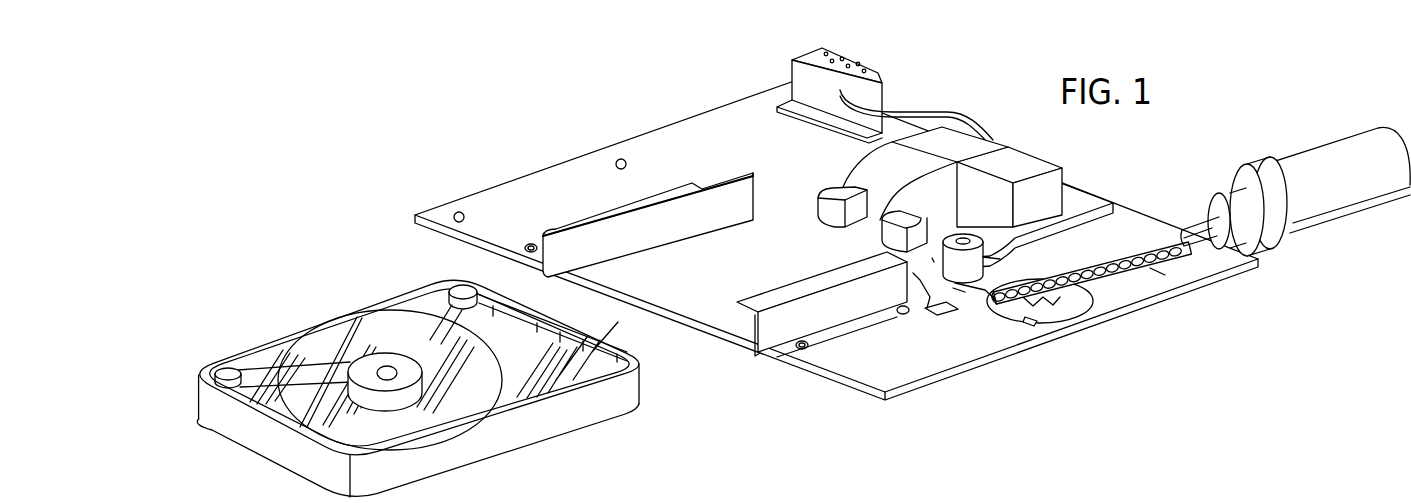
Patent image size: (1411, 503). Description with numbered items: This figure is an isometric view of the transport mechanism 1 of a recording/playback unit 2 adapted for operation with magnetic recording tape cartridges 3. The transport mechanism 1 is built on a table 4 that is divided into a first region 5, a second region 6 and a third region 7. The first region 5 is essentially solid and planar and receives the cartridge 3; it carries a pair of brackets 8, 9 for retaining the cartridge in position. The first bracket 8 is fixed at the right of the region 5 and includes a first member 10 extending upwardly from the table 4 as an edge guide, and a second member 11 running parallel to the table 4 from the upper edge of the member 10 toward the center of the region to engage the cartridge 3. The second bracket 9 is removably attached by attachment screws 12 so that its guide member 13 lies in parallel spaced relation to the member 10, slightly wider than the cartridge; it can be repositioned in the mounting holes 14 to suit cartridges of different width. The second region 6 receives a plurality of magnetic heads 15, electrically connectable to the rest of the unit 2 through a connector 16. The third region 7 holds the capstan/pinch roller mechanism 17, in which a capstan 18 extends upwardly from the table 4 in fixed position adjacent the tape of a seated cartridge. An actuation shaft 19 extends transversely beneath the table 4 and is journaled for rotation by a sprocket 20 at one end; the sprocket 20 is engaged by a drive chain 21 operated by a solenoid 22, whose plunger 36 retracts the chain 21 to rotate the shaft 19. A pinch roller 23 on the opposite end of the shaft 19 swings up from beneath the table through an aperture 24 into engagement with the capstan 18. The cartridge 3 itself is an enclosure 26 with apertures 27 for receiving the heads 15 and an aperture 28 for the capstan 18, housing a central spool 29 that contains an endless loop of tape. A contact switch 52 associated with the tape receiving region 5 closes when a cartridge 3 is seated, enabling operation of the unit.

The transport mechanism 1 is at (697, 107).
The recording/playback unit 2 is at (467, 145).
The magnetic recording tape cartridge 3 is at (328, 322).
The table 4 is at (943, 380).
The first region 5 is at (698, 277).
The second region 6 is at (791, 160).
The third region 7 is at (1166, 280).
The first bracket 8 is at (758, 353).
The second bracket 9 is at (753, 173).
The first member 10 is at (756, 328).
The second member 11 is at (800, 287).
The attachment screws 12 is at (527, 252).
The guide member 13 is at (650, 235).
The mounting holes 14 is at (619, 169).
The magnetic heads 15 is at (818, 209).
The connector 16 is at (882, 74).
The capstan/pinch roller mechanism 17 is at (982, 300).
The capstan 18 is at (973, 238).
The actuation shaft 19 is at (957, 288).
The sprocket 20 is at (1087, 313).
The drive chain 21 is at (1085, 270).
The solenoid 22 is at (1317, 172).
The pinch roller 23 is at (931, 306).
The aperture 24 is at (1026, 248).
The enclosure 26 is at (562, 381).
The apertures 27 is at (570, 322).
The aperture 28 is at (617, 342).
The spool 29 is at (366, 345).
The plunger 36 is at (1200, 227).
The contact switch 52 is at (925, 320).